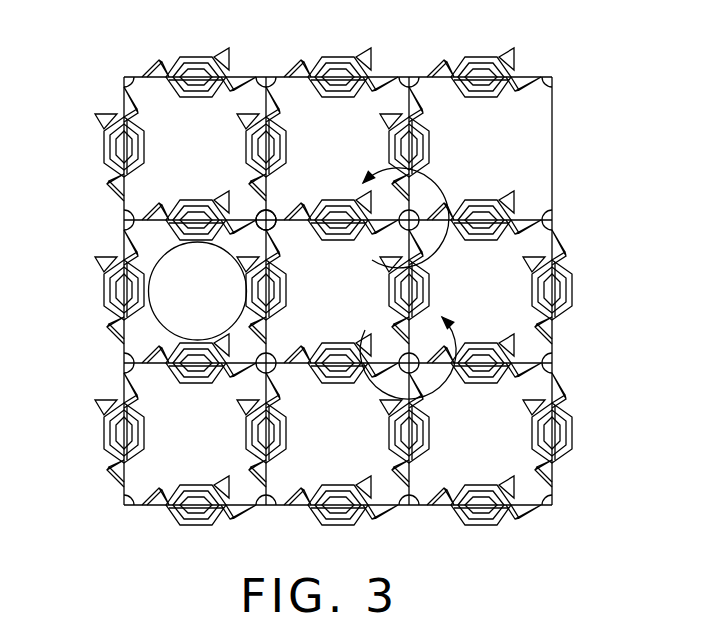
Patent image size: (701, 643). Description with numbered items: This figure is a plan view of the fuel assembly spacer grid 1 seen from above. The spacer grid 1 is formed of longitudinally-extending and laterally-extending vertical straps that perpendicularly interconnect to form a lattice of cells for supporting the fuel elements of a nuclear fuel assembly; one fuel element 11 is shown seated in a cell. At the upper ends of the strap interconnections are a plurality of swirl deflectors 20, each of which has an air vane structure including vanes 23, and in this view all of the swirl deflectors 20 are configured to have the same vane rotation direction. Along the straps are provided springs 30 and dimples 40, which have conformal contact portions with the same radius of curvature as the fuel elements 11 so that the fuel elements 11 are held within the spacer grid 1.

The spacer grid 1 is at (615, 103).
The fuel element 11 is at (180, 307).
The swirl deflector 20 is at (283, 198).
The vane 23 is at (555, 247).
The spring 30 is at (470, 345).
The dimple 40 is at (513, 78).